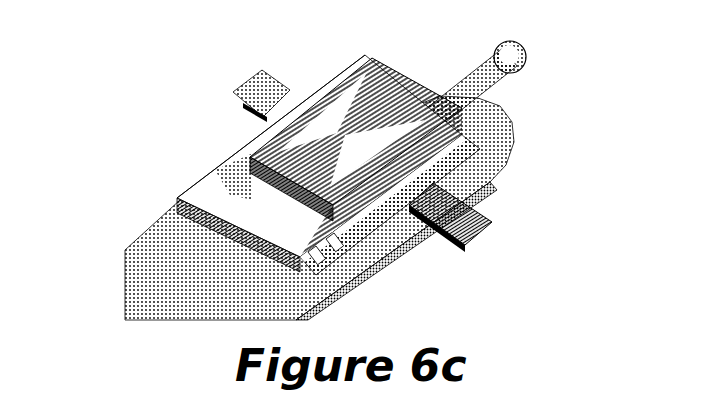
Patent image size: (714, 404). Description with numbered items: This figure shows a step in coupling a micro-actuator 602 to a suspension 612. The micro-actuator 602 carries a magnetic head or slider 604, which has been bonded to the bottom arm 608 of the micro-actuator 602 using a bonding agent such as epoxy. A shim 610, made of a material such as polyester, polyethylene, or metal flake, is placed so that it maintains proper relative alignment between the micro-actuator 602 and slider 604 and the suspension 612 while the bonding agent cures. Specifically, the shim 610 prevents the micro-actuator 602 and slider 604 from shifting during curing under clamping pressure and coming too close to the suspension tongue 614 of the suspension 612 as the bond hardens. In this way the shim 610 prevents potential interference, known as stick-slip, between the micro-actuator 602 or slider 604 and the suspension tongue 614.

The micro-actuator 602 is at (207, 153).
The magnetic head (slider) 604 is at (393, 112).
The bottom arm 608 is at (225, 247).
The shim 610 is at (452, 214).
The suspension 612 is at (370, 277).
The suspension tongue 614 is at (380, 240).